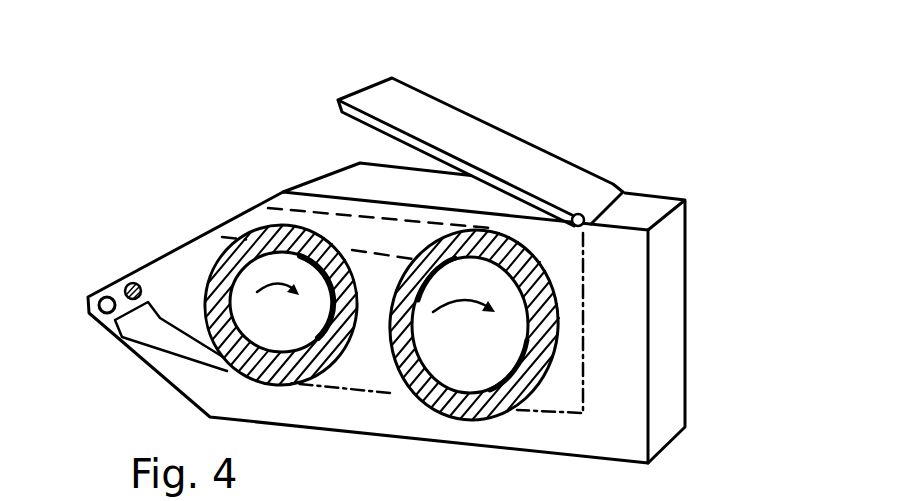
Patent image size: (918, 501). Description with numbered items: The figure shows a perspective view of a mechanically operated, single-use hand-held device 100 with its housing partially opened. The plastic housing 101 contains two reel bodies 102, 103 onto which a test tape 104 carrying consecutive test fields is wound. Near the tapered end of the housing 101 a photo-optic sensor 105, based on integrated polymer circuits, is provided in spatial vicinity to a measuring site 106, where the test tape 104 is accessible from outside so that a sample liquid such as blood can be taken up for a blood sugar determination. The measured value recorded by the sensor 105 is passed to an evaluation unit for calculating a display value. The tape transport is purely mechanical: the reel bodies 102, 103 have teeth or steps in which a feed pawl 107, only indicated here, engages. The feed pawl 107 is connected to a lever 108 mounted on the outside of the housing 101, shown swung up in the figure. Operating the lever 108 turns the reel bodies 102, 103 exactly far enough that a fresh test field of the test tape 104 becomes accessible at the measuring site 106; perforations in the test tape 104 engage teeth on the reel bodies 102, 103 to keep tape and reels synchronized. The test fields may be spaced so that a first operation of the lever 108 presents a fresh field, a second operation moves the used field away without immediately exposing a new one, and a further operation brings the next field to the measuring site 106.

The hand-held device 100 is at (125, 108).
The housing 101 is at (667, 385).
The reel body 102 is at (217, 278).
The reel body 103 is at (541, 278).
The test tape 104 is at (266, 217).
The photo-optic sensor 105 is at (137, 283).
The measuring site 106 is at (107, 297).
The feed pawl 107 is at (587, 342).
The lever 108 is at (427, 120).